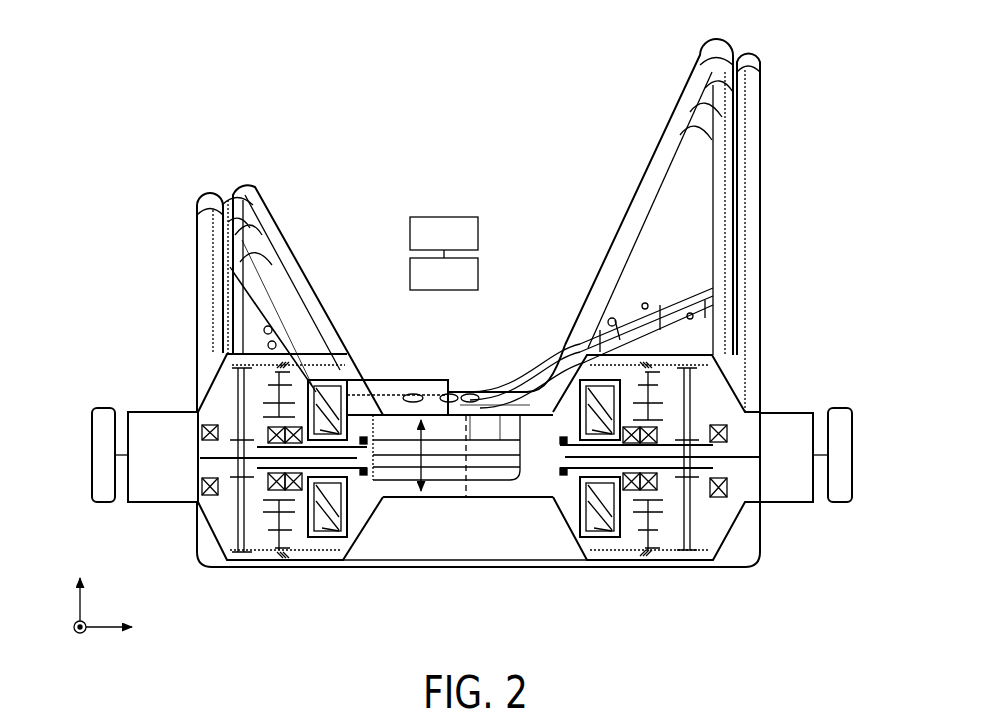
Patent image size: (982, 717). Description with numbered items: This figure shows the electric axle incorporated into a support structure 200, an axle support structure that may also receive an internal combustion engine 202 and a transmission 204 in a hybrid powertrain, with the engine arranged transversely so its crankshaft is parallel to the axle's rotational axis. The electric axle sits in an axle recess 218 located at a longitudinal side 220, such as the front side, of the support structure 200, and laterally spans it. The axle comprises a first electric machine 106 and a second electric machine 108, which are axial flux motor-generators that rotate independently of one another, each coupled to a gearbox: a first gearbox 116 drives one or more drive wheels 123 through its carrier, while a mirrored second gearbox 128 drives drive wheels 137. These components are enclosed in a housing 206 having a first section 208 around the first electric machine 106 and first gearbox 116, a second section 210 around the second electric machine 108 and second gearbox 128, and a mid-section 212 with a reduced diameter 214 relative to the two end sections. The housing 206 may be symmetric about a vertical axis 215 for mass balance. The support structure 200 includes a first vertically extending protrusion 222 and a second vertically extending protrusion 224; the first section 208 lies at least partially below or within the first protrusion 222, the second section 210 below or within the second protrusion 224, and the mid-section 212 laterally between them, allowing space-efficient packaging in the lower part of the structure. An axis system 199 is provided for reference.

The support structure 200 is at (163, 169).
The first vertically extending protrusion 222 is at (239, 172).
The second vertically extending protrusion 224 is at (763, 50).
The first gearbox 116 is at (263, 366).
The second gearbox 128 is at (634, 362).
The internal combustion engine 202 is at (478, 224).
The transmission 204 is at (478, 272).
The longitudinal side 220 is at (417, 389).
The axle recess 218 is at (488, 389).
The drive wheels 123 is at (101, 406).
The drive wheels 137 is at (841, 406).
The reduced diameter 214 is at (421, 470).
The axis 215 is at (462, 458).
The mid-section 212 is at (472, 506).
The housing 206 is at (523, 497).
The first electric machine 106 is at (325, 547).
The second electric machine 108 is at (600, 547).
The first section 208 is at (292, 572).
The second section 210 is at (637, 572).
The axis system 199 is at (99, 616).